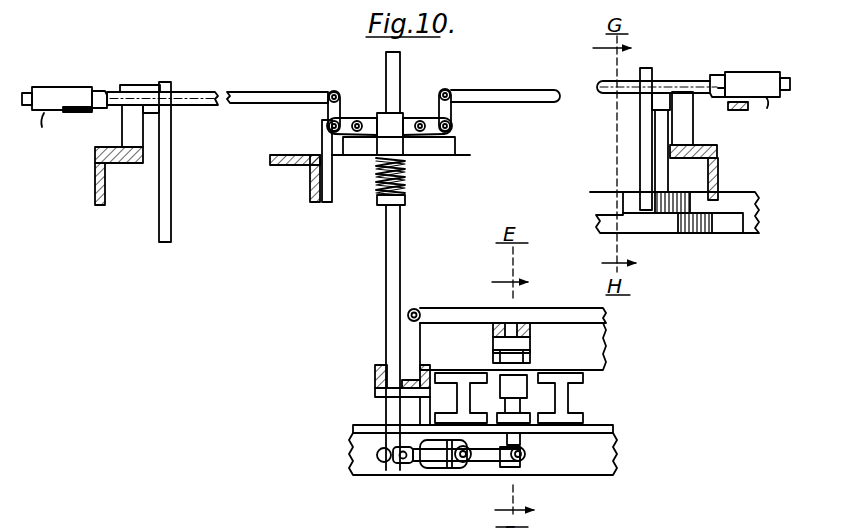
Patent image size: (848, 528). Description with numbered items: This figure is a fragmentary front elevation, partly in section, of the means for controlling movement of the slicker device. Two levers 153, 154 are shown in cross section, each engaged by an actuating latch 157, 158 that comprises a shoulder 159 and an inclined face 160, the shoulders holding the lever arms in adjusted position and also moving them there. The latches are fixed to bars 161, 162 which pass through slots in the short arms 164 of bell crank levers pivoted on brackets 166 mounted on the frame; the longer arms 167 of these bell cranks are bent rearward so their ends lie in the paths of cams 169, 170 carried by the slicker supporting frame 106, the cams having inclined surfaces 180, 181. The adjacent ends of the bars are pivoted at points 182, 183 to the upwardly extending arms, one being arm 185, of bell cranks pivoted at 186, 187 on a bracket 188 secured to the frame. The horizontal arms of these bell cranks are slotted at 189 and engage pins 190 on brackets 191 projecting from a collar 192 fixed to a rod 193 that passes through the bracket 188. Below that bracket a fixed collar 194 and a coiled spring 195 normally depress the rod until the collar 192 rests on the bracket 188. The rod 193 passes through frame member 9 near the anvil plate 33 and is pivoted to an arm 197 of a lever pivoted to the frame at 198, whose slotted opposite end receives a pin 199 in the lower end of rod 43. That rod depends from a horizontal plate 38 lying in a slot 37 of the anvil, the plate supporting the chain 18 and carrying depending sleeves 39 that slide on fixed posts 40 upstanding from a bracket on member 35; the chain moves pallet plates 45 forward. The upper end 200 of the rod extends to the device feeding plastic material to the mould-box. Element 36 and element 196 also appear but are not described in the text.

The actuating latch 157 is at (67, 87).
The shoulder 159 is at (100, 88).
The lever 153 is at (63, 113).
The inclined face 160 is at (44, 113).
The bar 161 is at (213, 90).
The bracket 166 is at (121, 128).
The short arm 164 is at (164, 82).
The longer arm 167 is at (168, 137).
The upper end of rod 200 is at (397, 60).
The rod 193 is at (388, 289).
The pivot point 182 is at (333, 91).
The pivot point 183 is at (446, 89).
The pivot point 186 is at (329, 128).
The upwardly extending arm 185 is at (453, 108).
The pivot point 187 is at (328, 110).
The pin 190 is at (353, 167).
The bracket 191 is at (403, 130).
The collar 192 is at (404, 140).
The bracket 188 is at (452, 148).
The slot 189 is at (317, 161).
The coiled spring 195 is at (405, 182).
The fixed collar 194 is at (377, 200).
The bar 162 is at (556, 84).
The actuating latch 158 is at (742, 77).
The lever 154 is at (738, 111).
The cam 169 is at (628, 190).
The slicker supporting frame 106 is at (750, 192).
The cam 170 is at (734, 231).
The inclined surface 180 is at (673, 192).
The inclined surface 181 is at (700, 233).
The pallet plate 45 is at (447, 308).
The anvil plate 33 is at (606, 341).
The chain 18 is at (521, 322).
The horizontal plate 38 is at (494, 343).
The slot 37 is at (529, 355).
The depending sleeve 39 is at (524, 388).
The fixed post 40 is at (518, 404).
The rail 36 is at (584, 410).
The frame member 9 is at (378, 368).
The member 35 is at (360, 452).
The rod 43 is at (521, 437).
The arm 197 is at (418, 464).
The pivot point 198 is at (463, 463).
The pin 199 is at (526, 456).
The pin 196 is at (521, 458).